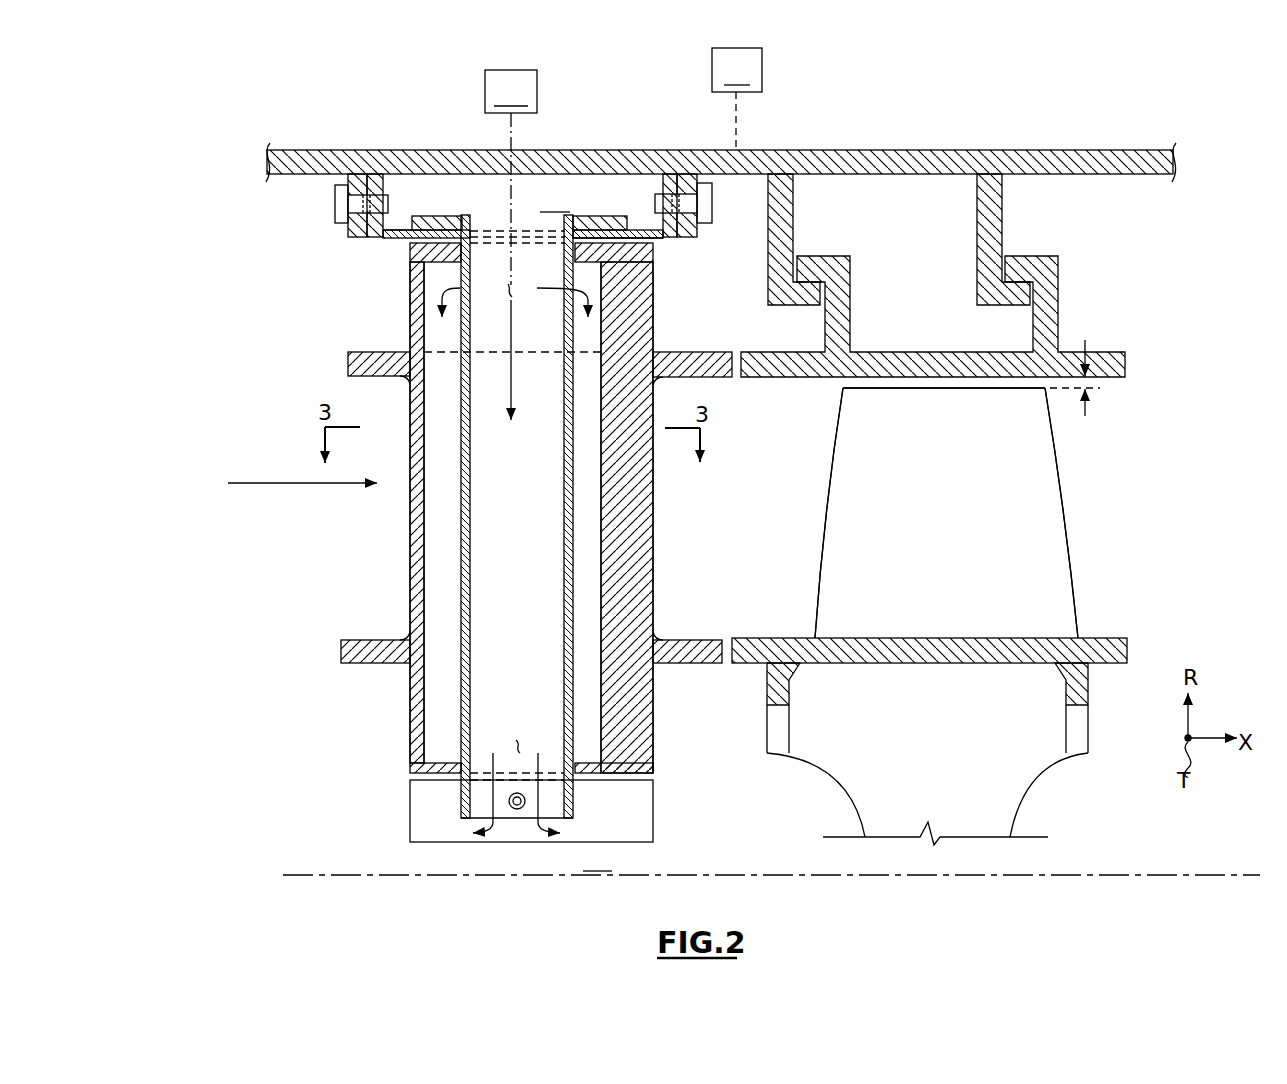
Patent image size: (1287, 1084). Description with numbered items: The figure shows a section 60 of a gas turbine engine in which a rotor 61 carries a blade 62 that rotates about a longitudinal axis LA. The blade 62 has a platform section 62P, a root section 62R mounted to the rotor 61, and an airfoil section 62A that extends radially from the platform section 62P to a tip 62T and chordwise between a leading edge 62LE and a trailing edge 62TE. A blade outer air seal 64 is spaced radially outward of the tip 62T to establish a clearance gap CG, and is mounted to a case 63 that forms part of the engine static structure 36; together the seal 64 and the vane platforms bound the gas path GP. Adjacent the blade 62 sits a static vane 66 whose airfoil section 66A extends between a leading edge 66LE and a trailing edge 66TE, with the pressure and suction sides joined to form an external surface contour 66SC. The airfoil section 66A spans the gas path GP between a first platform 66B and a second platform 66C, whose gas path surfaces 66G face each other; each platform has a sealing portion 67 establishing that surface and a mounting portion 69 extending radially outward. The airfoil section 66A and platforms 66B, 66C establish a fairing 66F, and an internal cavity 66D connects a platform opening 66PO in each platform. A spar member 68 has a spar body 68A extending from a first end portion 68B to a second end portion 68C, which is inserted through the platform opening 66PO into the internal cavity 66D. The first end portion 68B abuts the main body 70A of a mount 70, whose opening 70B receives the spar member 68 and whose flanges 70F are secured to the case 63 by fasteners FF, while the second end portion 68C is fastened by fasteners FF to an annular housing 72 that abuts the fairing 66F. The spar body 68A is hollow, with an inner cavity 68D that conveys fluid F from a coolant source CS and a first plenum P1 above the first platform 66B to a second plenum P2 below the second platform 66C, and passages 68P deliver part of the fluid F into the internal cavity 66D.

The section 60 is at (205, 83).
The case 63 is at (317, 150).
The engine static structure 36 is at (737, 99).
The blade outer air seal 64 is at (1119, 351).
The mount 70 is at (637, 228).
The main body 70A is at (663, 240).
The opening 70B is at (478, 226).
The flange 70F is at (388, 178).
The spar member 68 is at (433, 214).
The spar body 68A is at (462, 583).
The first end portion 68B is at (447, 223).
The second end portion 68C is at (470, 820).
The inner cavity 68D is at (466, 450).
The passage 68P is at (476, 296).
The vane 66 is at (352, 345).
The airfoil section 66A is at (630, 540).
The first platform 66B is at (346, 362).
The second platform 66C is at (342, 660).
The internal cavity 66D is at (418, 520).
The fairing 66F is at (410, 542).
The gas path surface 66G is at (366, 378).
The leading edge 66LE is at (410, 575).
The trailing edge 66TE is at (655, 486).
The external surface contour 66SC is at (656, 516).
The platform opening 66PO is at (468, 262).
The sealing portion 67 is at (347, 356).
The mounting portion 69 is at (408, 290).
The annular housing 72 is at (425, 803).
The blade 62 is at (1067, 505).
The airfoil section 62A is at (1047, 570).
The tip 62T is at (985, 383).
The leading edge 62LE is at (822, 520).
The trailing edge 62TE is at (1070, 532).
The platform section 62P is at (1110, 638).
The root section 62R is at (1066, 720).
The rotor 61 is at (1091, 749).
The fastener FF is at (334, 206).
The coolant source CS is at (511, 177).
The first plenum P1 is at (555, 200).
The second plenum P2 is at (597, 859).
The gas path GP is at (262, 485).
The clearance gap CG is at (1085, 416).
The longitudinal axis LA is at (1197, 875).
The fluid F is at (516, 544).